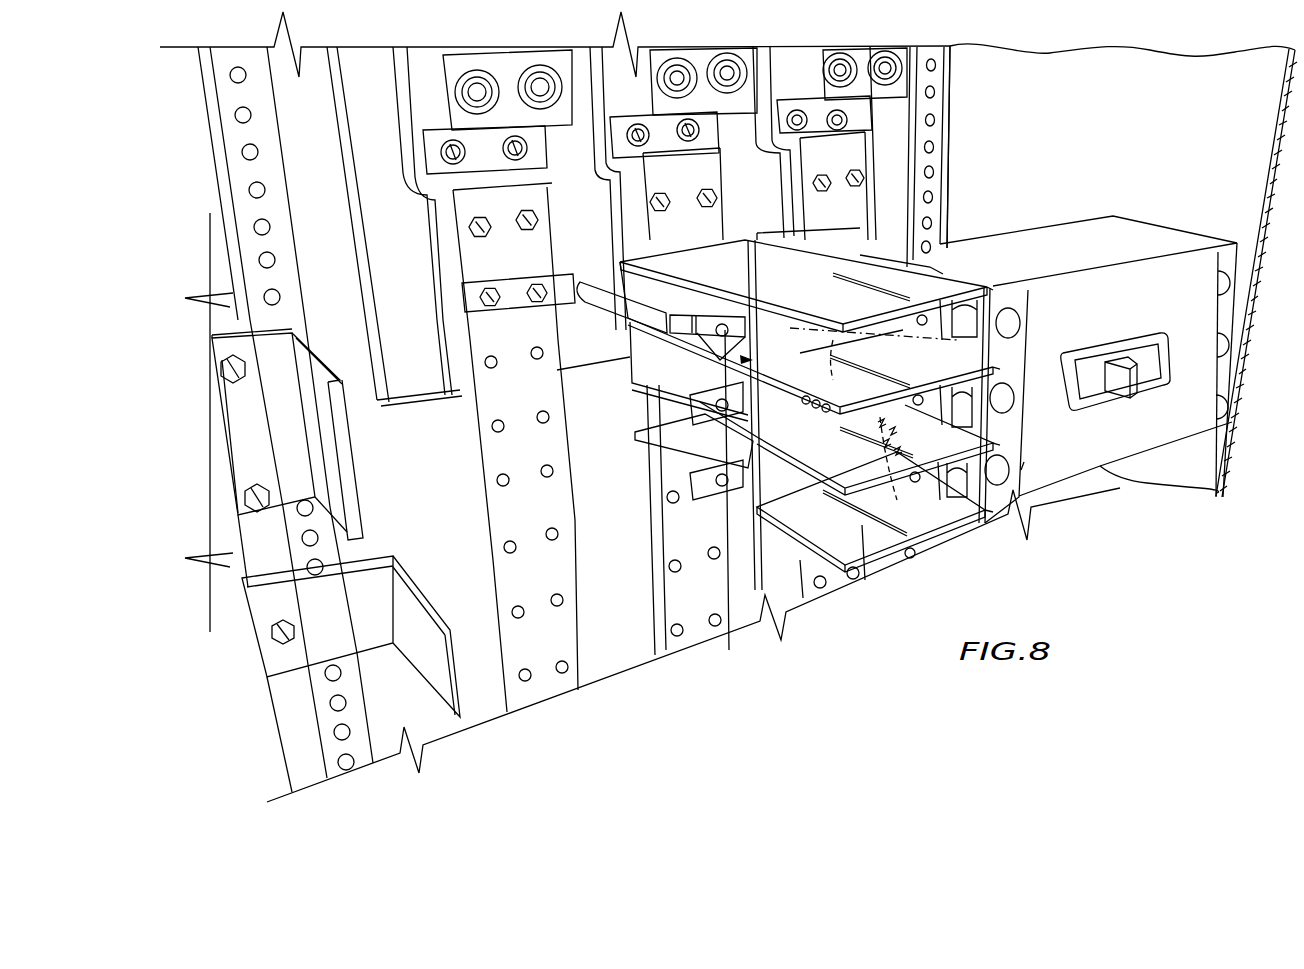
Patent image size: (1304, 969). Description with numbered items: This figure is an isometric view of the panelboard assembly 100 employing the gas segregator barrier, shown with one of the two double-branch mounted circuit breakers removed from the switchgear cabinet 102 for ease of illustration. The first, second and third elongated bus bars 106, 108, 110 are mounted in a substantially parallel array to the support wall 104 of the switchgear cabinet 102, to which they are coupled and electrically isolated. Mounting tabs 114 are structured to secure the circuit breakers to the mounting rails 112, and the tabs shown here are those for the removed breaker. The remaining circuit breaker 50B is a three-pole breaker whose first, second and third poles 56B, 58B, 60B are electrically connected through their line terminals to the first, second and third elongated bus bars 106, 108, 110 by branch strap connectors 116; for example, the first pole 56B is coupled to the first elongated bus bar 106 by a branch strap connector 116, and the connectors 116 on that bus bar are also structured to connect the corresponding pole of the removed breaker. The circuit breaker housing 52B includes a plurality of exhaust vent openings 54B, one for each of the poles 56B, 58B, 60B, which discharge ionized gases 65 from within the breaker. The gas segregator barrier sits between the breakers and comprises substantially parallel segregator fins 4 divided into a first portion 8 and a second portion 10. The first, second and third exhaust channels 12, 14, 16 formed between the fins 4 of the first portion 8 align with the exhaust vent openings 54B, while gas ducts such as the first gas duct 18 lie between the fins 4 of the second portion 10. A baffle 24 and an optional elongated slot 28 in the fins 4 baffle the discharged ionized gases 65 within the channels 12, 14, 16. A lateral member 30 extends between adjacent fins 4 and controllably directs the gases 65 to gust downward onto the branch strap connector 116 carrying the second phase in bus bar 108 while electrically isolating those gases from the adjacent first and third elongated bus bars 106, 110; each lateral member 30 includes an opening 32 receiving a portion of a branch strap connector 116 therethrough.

The segregator fins 4 is at (810, 422).
The first portion 8 is at (942, 260).
The second portion 10 is at (800, 240).
The first exhaust channel 12 is at (730, 322).
The second exhaust channel 14 is at (733, 443).
The third exhaust channel 16 is at (794, 511).
The first gas duct 18 is at (688, 301).
The baffle 24 is at (777, 303).
The elongated slot 28 is at (845, 293).
The lateral member 30 is at (660, 283).
The opening 32 is at (748, 381).
The circuit breaker 50B is at (1088, 369).
The housing 52B is at (1153, 448).
The exhaust vent openings 54B is at (950, 330).
The first pole 56B is at (1033, 315).
The second pole 58B is at (1028, 379).
The third pole 60B is at (1025, 462).
The ionized gases 65 is at (953, 305).
The panelboard assembly 100 is at (838, 670).
The switchgear cabinet 102 is at (362, 58).
The support wall 104 is at (557, 226).
The first elongated bus bar 106 is at (553, 225).
The second elongated bus bar 108 is at (713, 223).
The third elongated bus bar 110 is at (860, 143).
The mounting rails 112 is at (283, 197).
The mounting tabs 114 is at (316, 380).
The branch strap connector 116 is at (602, 278).